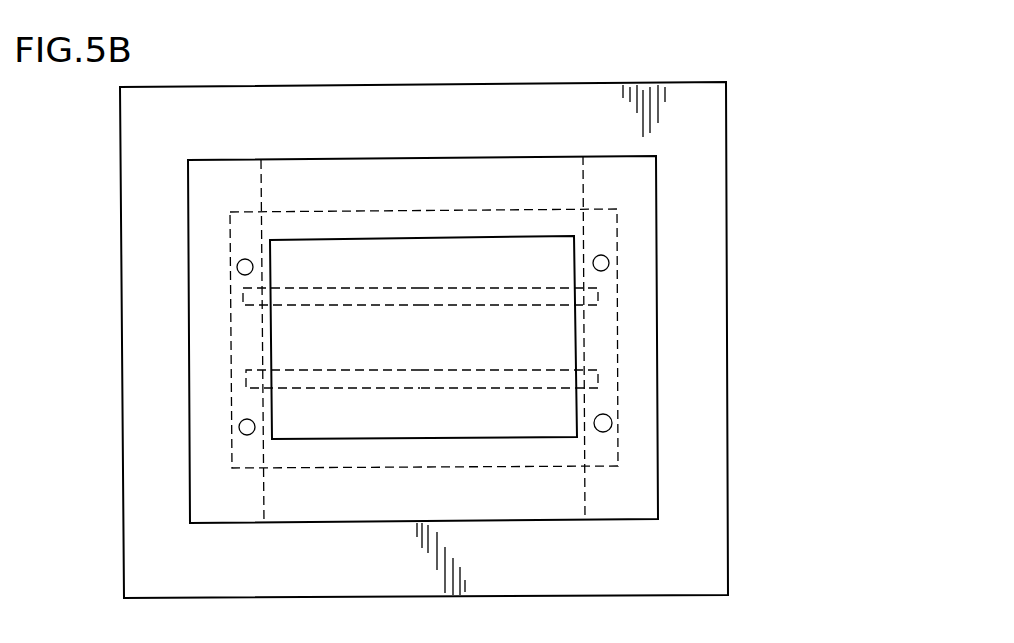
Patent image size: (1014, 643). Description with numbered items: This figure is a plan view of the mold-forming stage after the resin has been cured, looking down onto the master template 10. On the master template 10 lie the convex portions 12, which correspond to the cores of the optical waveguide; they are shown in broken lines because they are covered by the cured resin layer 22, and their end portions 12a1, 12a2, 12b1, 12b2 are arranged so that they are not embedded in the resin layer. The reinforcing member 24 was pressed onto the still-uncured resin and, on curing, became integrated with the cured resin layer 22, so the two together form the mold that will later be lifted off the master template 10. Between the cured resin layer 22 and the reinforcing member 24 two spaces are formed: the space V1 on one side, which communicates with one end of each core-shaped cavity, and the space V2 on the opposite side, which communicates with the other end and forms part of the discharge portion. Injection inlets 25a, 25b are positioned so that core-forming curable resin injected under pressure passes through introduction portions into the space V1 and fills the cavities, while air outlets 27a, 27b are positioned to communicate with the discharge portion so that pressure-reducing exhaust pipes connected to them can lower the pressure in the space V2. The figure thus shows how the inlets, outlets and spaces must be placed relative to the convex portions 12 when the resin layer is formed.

The master template 10 is at (536, 82).
The reinforcing member 24 is at (646, 238).
The convex portions 12 is at (443, 378).
The cured resin layer 22 is at (392, 262).
The space V1 is at (600, 343).
The space V2 is at (253, 346).
The end portion of convex portion 12a1 is at (600, 299).
The end portion of convex portion 12a2 is at (600, 382).
The end portion of convex portion 12b1 is at (243, 298).
The end portion of convex portion 12b2 is at (253, 388).
The air outlet 27a is at (243, 260).
The air outlet 27b is at (246, 436).
The injection inlet 25a is at (601, 254).
The injection inlet 25b is at (601, 430).